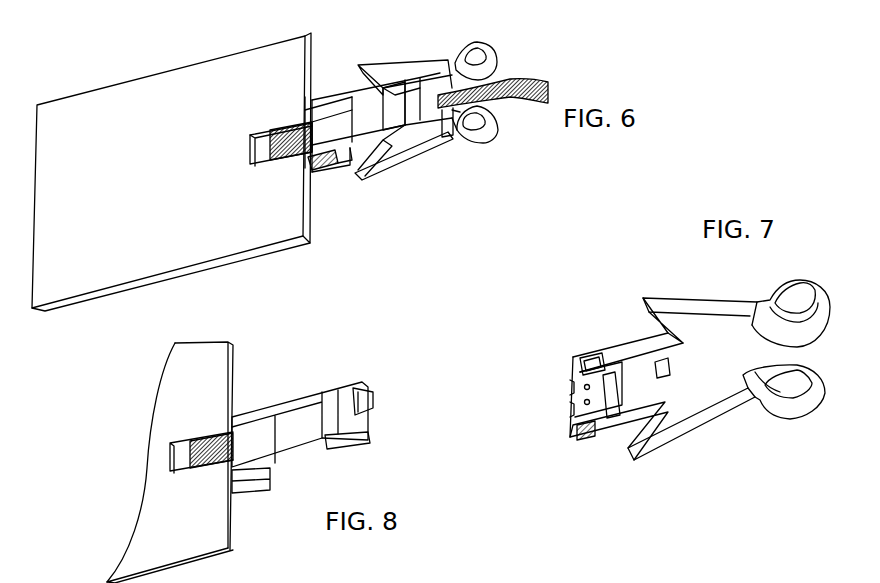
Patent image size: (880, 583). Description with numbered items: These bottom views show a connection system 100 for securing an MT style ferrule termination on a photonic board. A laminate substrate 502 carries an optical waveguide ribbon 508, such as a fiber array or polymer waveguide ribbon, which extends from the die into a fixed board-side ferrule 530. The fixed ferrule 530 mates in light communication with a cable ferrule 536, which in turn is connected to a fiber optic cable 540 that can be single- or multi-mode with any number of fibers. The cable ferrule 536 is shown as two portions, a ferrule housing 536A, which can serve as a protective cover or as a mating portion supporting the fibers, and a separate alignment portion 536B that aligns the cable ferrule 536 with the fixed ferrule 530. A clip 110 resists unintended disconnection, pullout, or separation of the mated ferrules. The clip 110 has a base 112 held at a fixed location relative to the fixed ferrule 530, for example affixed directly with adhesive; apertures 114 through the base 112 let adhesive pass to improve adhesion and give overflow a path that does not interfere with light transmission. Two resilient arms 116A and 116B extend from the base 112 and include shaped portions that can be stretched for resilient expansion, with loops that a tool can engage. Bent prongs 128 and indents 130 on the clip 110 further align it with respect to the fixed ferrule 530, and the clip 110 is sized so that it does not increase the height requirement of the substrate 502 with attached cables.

In FIG. 6, the connection system 100 is at (364, 224).
In FIG. 6, the clip 110 is at (409, 176).
In FIG. 7, the clip 110 is at (716, 453).
In FIG. 7, the base 112 is at (553, 422).
In FIG. 7, the apertures 114 is at (612, 385).
In FIG. 6, the resilient arm 116A is at (433, 159).
In FIG. 7, the resilient arm 116B is at (713, 304).
In FIG. 7, the bent prongs 128 is at (568, 375).
In FIG. 7, the indents 130 is at (586, 445).
In FIG. 6, the laminate substrate 502 is at (152, 153).
In FIG. 8, the laminate substrate 502 is at (205, 530).
In FIG. 6, the optical waveguide ribbon 508 is at (290, 138).
In FIG. 6, the fixed ferrule 530 is at (323, 130).
In FIG. 8, the fixed ferrule 530 is at (240, 437).
In FIG. 6, the cable ferrule 536 is at (396, 82).
In FIG. 8, the ferrule housing 536A is at (300, 417).
In FIG. 8, the alignment portion 536B is at (358, 437).
In FIG. 6, the fiber optic cable 540 is at (520, 90).